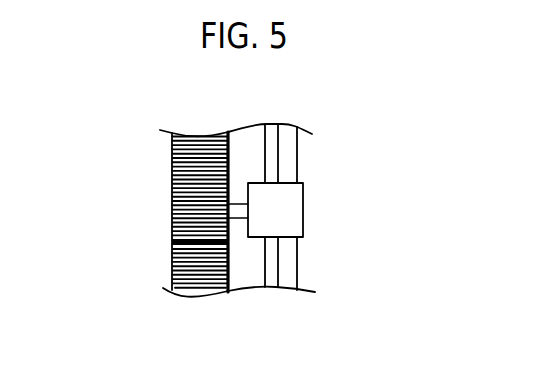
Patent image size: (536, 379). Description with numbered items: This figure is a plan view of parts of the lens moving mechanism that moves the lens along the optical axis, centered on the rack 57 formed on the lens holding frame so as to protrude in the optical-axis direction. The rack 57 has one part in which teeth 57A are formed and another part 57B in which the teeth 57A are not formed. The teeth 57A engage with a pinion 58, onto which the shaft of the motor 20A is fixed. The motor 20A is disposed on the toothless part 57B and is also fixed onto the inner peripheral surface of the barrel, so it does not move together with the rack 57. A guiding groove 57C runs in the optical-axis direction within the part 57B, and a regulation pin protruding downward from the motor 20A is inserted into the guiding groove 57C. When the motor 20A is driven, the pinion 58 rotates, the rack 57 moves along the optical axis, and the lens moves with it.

The motor 20A is at (300, 207).
The rack 57 is at (172, 246).
The teeth 57A is at (198, 273).
The part in which the teeth are not formed 57B is at (278, 277).
The guiding groove 57C is at (274, 258).
The pinion 58 is at (177, 199).